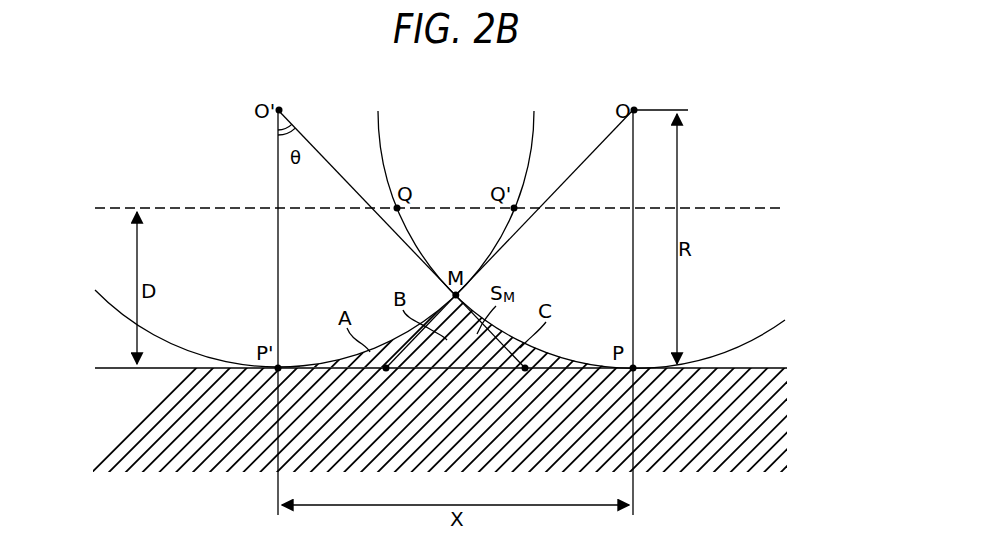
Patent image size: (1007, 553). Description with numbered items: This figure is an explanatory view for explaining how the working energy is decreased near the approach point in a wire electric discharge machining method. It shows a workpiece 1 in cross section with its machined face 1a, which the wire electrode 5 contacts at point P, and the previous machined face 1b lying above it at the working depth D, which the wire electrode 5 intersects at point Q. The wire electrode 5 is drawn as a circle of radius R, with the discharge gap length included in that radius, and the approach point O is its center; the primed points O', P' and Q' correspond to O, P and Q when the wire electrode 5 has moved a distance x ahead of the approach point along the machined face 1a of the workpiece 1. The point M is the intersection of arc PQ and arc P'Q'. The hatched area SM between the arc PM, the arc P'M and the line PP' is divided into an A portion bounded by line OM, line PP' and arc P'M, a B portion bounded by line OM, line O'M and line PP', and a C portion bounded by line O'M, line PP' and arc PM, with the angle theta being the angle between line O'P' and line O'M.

The workpiece 1 is at (727, 456).
The machined face 1a is at (775, 372).
The previous machined face 1b is at (768, 209).
The wire electrode 5 is at (124, 303).